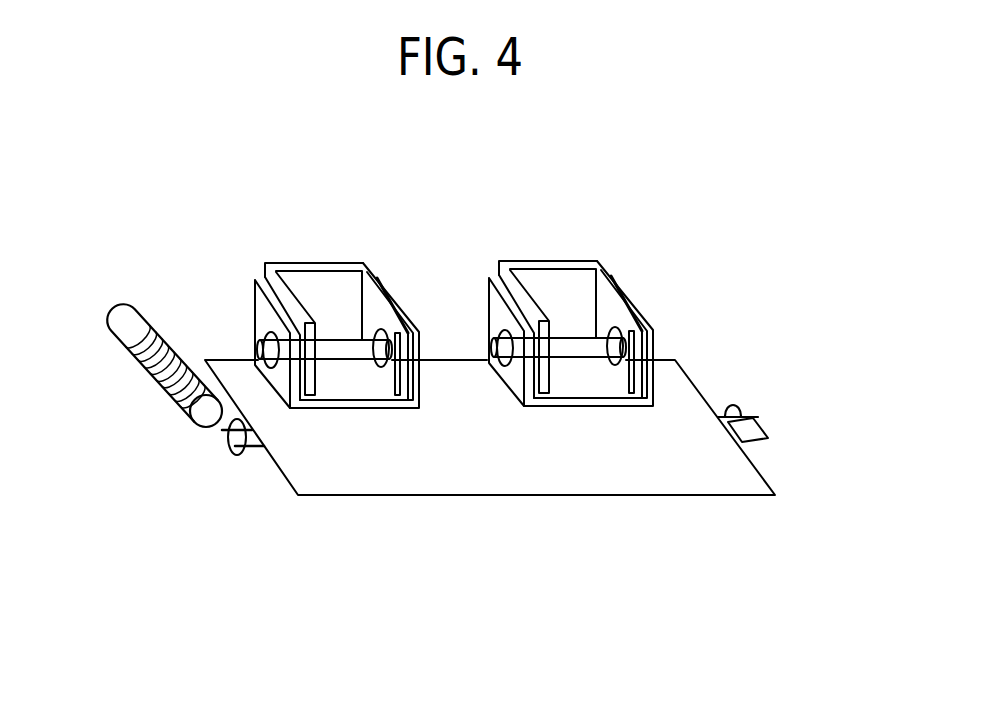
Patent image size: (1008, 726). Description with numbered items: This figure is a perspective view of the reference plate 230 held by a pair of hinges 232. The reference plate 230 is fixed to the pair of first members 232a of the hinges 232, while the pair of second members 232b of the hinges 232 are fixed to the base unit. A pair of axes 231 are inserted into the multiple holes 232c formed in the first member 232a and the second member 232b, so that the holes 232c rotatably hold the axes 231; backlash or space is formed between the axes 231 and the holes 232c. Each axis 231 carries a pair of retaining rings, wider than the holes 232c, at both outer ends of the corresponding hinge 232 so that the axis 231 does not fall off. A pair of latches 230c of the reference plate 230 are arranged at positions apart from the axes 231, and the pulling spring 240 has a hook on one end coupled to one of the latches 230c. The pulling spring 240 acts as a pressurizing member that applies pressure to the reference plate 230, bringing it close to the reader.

The reference plate 230 is at (578, 502).
The latches 230c is at (225, 447).
The axes 231 is at (348, 353).
The hinges 232 is at (434, 292).
The first member 232a is at (260, 304).
The second member 232b is at (323, 290).
The holes 232c is at (390, 325).
The pulling spring 240 is at (152, 376).